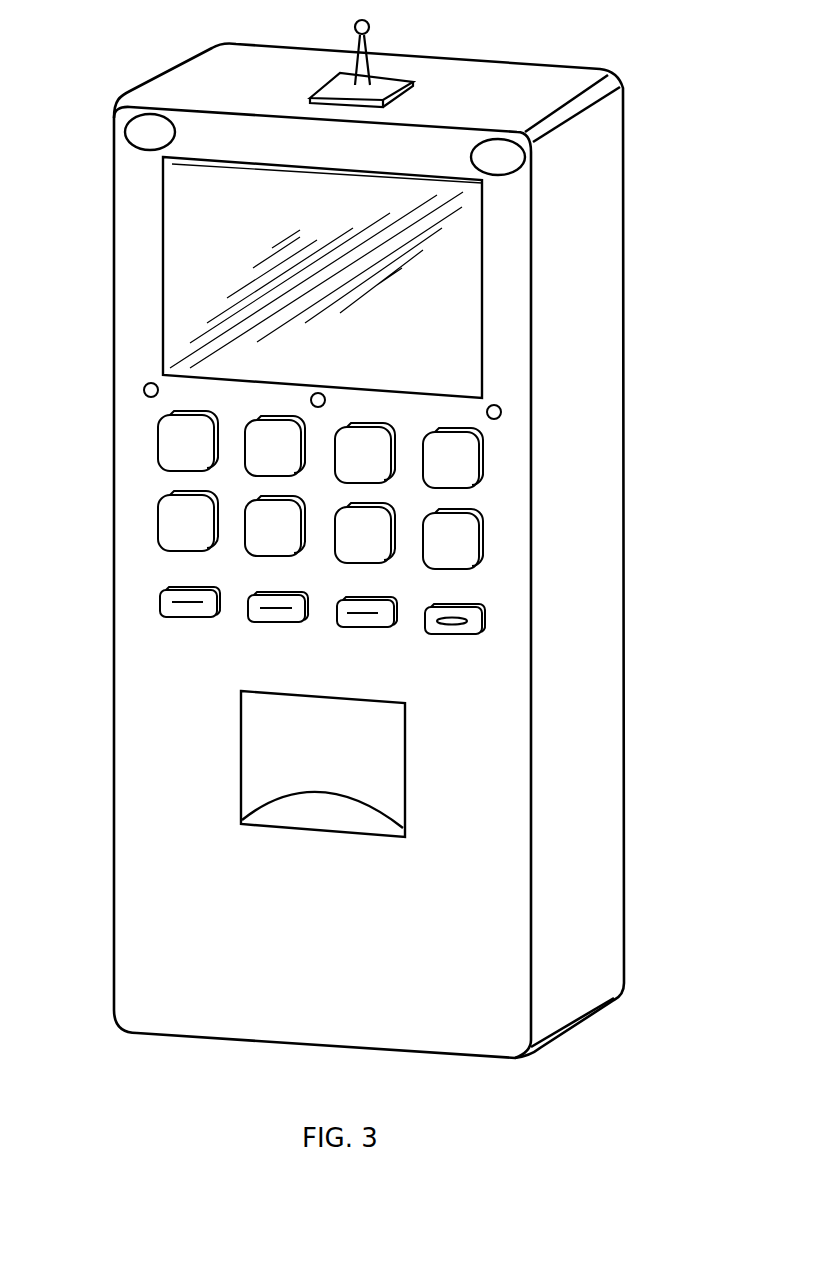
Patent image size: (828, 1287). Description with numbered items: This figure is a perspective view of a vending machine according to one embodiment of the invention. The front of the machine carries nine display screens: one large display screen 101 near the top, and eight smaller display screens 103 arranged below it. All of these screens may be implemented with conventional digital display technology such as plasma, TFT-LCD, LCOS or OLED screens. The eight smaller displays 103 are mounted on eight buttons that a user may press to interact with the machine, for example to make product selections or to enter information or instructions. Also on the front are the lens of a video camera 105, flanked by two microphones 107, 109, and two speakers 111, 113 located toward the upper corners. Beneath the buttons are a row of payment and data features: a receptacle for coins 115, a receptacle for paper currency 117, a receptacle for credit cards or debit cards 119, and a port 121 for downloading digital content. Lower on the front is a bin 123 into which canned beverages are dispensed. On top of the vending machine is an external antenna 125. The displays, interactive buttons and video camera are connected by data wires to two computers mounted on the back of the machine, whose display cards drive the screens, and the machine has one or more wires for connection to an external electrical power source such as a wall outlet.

The large display screen 101 is at (175, 253).
The smaller display screens 103 is at (108, 417).
The lens of a video camera 105 is at (317, 396).
The microphone 107 is at (146, 390).
The microphone 109 is at (500, 410).
The speaker 111 is at (137, 131).
The speaker 113 is at (497, 157).
The receptacle for coins 115 is at (170, 612).
The receptacle for paper currency 117 is at (265, 617).
The receptacle for credit cards or debit cards 119 is at (353, 623).
The port 121 is at (433, 630).
The bin 123 is at (390, 760).
The external antenna 125 is at (355, 72).